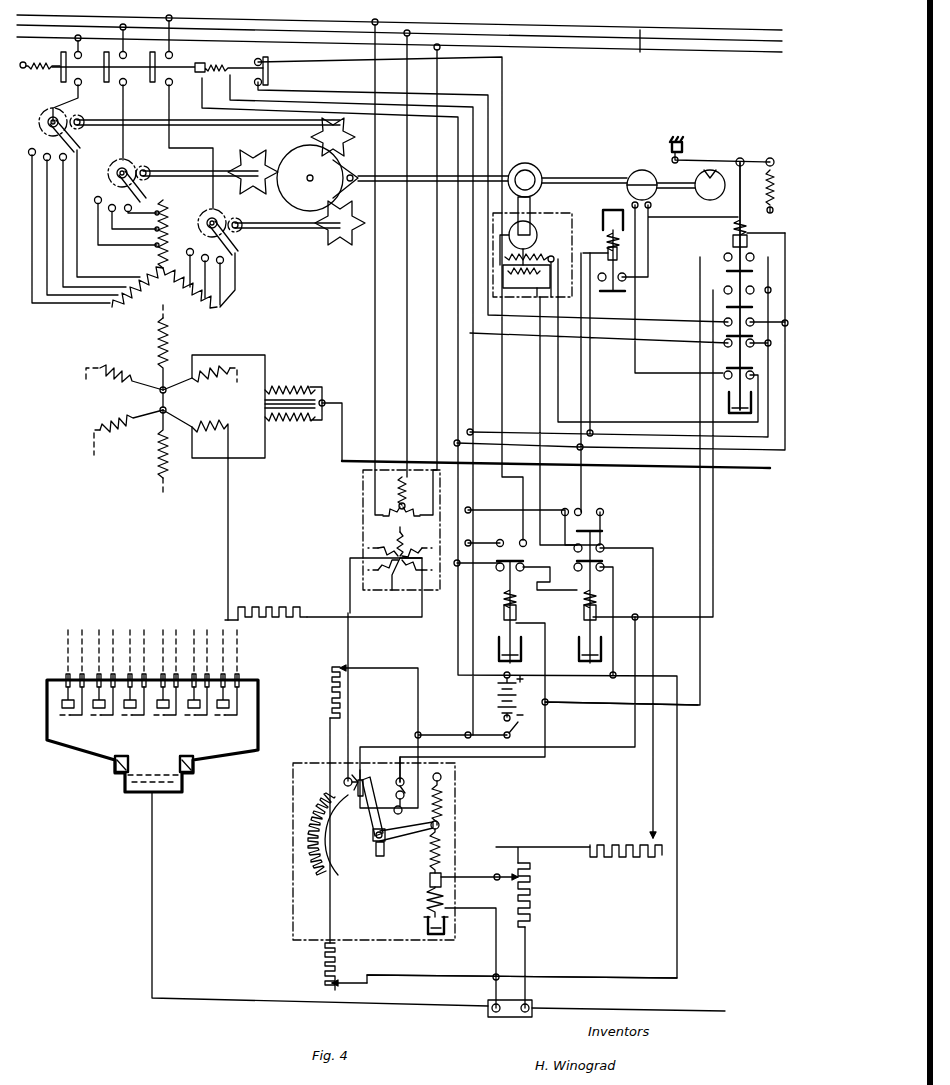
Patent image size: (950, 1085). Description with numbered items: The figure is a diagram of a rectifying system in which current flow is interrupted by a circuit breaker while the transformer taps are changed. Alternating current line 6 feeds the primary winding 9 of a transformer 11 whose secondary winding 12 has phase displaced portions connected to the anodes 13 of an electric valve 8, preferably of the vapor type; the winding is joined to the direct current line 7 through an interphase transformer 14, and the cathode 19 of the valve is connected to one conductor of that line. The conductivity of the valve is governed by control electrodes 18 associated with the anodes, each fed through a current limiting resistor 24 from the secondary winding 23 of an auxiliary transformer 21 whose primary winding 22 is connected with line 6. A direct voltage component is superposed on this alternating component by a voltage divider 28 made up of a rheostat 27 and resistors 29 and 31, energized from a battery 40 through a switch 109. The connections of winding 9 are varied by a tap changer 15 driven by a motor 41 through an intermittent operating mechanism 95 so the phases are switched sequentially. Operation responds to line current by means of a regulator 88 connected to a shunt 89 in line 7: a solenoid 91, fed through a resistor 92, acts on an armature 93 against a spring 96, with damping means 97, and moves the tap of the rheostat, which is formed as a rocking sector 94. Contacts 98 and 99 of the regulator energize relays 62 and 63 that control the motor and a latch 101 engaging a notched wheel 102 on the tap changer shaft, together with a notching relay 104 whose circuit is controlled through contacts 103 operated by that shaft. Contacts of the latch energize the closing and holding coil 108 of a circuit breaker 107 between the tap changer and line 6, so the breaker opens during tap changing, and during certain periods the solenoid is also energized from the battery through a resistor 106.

The alternating current line 6 is at (638, 40).
The direct current line 7 is at (735, 469).
The electric valve 8 is at (78, 748).
The primary winding 9 is at (170, 210).
The transformer 11 is at (168, 487).
The secondary winding 12 is at (158, 342).
The anodes 13 is at (220, 712).
The interphase transformer 14 is at (288, 388).
The tap changer 15 is at (130, 170).
The control electrodes 18 is at (228, 718).
The cathode 19 is at (143, 792).
The auxiliary transformer 21 is at (362, 498).
The primary winding 22 is at (406, 497).
The secondary winding 23 is at (392, 588).
The current limiting resistor 24 is at (282, 607).
The rheostat 27 is at (328, 795).
The voltage divider 28 is at (308, 742).
The resistor 29 is at (324, 966).
The resistor 31 is at (330, 684).
The battery 40 is at (498, 704).
The motor 41 is at (552, 220).
The relay 62 is at (603, 545).
The relay 63 is at (508, 576).
The regulator 88 is at (292, 806).
The shunt 89 is at (530, 1004).
The solenoid 91 is at (426, 897).
The resistor 92 is at (533, 903).
The armature 93 is at (430, 876).
The rocking sector 94 is at (335, 860).
The intermittent operating mechanism 95 is at (293, 152).
The spring 96 is at (452, 792).
The damping means 97 is at (425, 924).
The contact 98 is at (366, 786).
The contact 99 is at (398, 785).
The latch 101 is at (730, 250).
The notched wheel 102 is at (702, 194).
The contacts 103 is at (640, 170).
The relay 104 is at (606, 236).
The resistor 106 is at (614, 844).
The circuit breaker 107 is at (58, 70).
The closing and holding coil 108 is at (210, 66).
The switch 109 is at (516, 730).